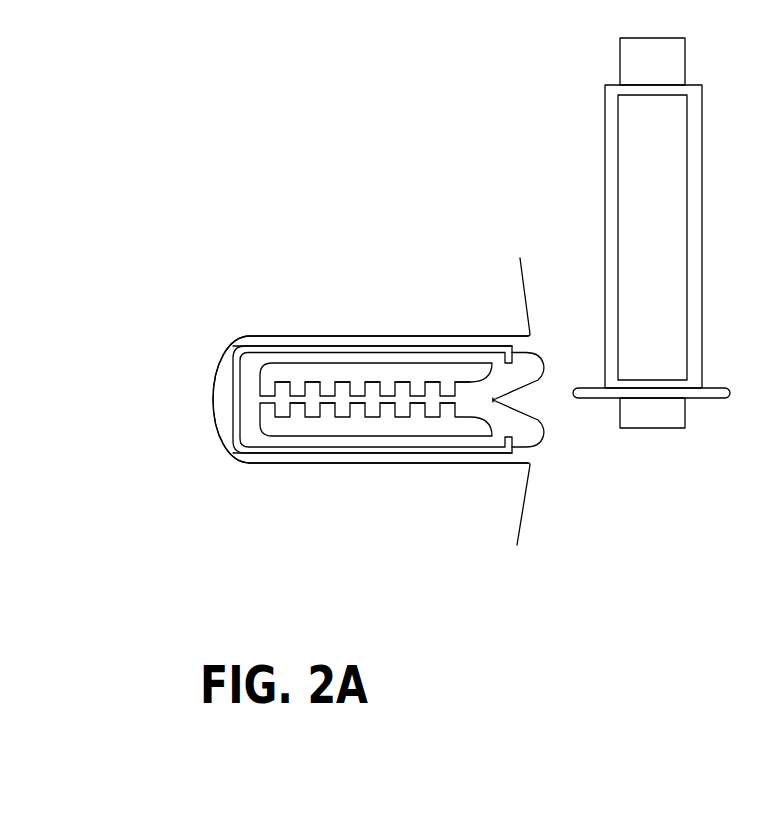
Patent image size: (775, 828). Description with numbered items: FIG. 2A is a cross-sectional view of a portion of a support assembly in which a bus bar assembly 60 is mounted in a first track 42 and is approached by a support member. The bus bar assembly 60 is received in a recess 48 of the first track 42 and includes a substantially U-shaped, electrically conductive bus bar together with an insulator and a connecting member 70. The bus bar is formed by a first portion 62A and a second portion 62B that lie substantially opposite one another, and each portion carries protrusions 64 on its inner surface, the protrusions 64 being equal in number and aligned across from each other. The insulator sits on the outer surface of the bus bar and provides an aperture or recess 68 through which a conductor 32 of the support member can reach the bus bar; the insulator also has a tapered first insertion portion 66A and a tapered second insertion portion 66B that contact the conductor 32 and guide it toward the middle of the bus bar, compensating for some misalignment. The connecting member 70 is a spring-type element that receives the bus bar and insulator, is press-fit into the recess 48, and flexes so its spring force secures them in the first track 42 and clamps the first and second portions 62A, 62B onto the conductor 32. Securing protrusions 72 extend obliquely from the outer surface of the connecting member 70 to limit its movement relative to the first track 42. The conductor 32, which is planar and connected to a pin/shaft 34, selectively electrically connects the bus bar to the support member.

The conductor 32 is at (702, 398).
The pin/shaft 34 is at (597, 122).
The first track 42 is at (516, 264).
The recess 48 is at (212, 395).
The bus bar assembly 60 is at (222, 318).
The first portion 62A is at (366, 364).
The second portion 62B is at (357, 437).
The protrusions 64 is at (352, 382).
The first insertion portion 66A is at (542, 352).
The second insertion portion 66B is at (542, 423).
The aperture or recess 68 is at (536, 404).
The connecting member 70 is at (350, 352).
The securing protrusions 72 is at (405, 346).